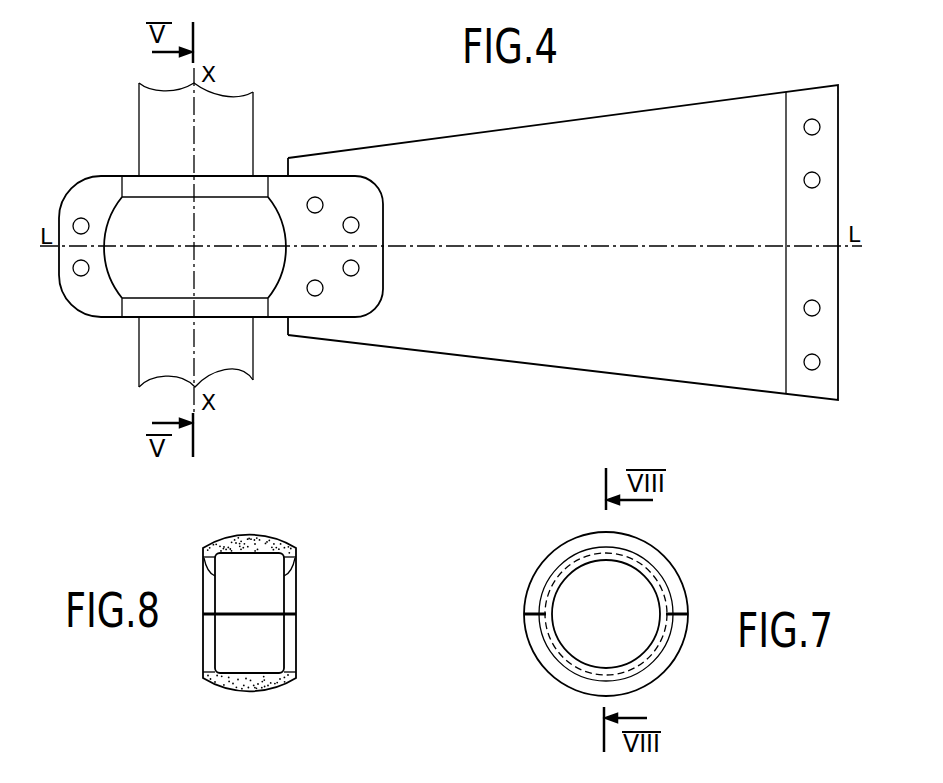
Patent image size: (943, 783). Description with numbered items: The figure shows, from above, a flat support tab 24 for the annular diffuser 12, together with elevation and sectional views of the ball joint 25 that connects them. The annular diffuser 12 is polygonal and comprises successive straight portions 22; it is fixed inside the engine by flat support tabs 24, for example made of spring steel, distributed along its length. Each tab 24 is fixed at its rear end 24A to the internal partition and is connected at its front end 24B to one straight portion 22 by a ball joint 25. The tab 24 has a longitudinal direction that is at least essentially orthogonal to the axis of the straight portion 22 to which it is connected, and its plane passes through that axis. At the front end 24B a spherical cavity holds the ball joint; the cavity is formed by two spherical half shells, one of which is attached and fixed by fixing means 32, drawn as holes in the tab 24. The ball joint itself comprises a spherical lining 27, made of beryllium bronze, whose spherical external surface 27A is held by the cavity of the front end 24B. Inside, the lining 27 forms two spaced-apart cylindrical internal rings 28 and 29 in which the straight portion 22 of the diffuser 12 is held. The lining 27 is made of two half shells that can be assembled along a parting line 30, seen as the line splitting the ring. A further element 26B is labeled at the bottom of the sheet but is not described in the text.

In FIG. 4, the annular diffuser 12 is at (262, 147).
In FIG. 4, the straight portion 22 is at (146, 143).
In FIG. 4, the flat support tab 24 is at (565, 353).
In FIG. 4, the rear end 24A is at (808, 385).
In FIG. 4, the front end 24B is at (310, 349).
In FIG. 4, the ball joint 25 is at (123, 331).
In FIG. 8, the bearing part 26B is at (328, 773).
In FIG. 8, the spherical lining 27 is at (204, 697).
In FIG. 7, the spherical lining 27 is at (698, 585).
In FIG. 8, the spherical external surface 27A is at (263, 533).
In FIG. 7, the spherical external surface 27A is at (542, 563).
In FIG. 8, the cylindrical internal ring 28 is at (202, 580).
In FIG. 8, the cylindrical internal ring 29 is at (297, 573).
In FIG. 8, the parting line 30 is at (297, 615).
In FIG. 7, the parting line 30 is at (520, 613).
In FIG. 4, the fixing means 32 is at (360, 266).